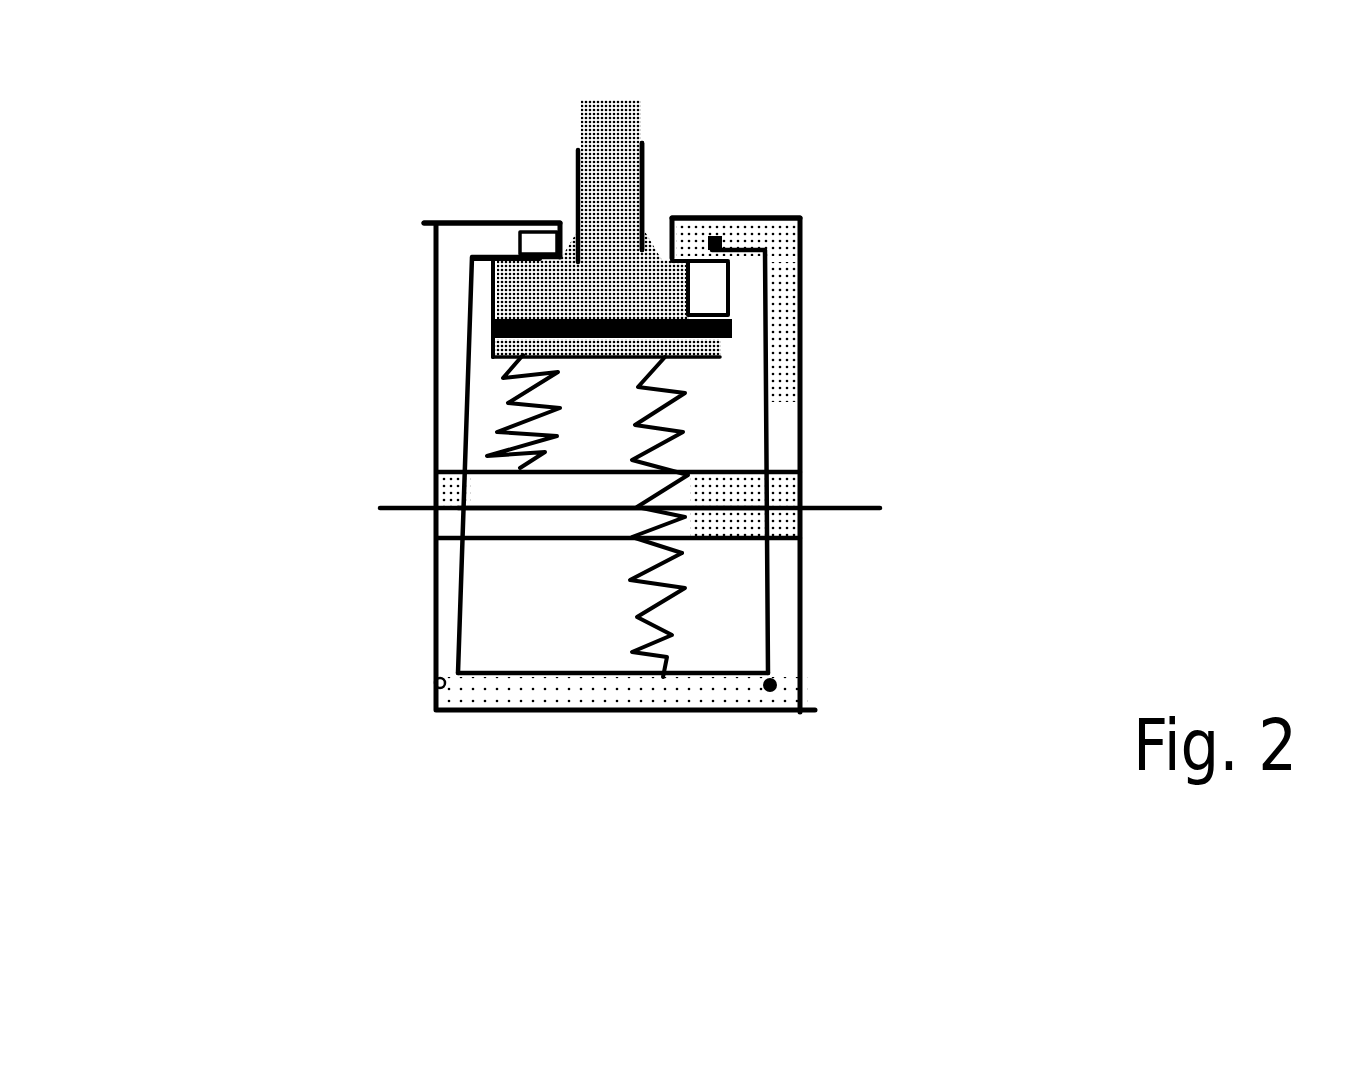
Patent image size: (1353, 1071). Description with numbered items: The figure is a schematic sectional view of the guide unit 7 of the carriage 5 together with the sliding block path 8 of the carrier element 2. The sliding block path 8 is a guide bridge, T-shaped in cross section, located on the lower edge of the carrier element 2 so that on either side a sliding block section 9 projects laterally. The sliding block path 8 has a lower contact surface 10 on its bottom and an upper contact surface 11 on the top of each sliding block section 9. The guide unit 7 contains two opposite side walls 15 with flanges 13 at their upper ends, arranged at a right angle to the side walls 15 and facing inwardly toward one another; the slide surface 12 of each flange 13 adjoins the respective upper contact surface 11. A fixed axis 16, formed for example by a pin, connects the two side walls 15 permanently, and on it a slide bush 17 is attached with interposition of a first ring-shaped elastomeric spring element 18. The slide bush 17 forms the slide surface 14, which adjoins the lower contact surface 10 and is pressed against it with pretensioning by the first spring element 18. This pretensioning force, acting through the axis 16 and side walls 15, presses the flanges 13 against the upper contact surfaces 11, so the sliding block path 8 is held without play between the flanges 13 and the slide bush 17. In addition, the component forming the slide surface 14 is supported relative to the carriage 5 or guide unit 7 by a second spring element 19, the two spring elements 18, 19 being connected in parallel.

The carrier element 2 is at (614, 176).
The carriage 5 is at (715, 690).
The guide unit 7 is at (822, 575).
The sliding block path 8 is at (637, 317).
The sliding block section 9 is at (540, 302).
The lower contact surface 10 is at (495, 506).
The upper contact surface 11 is at (517, 238).
The slide surface 12 is at (505, 343).
The flange 13 is at (487, 222).
The slide surface 14 is at (600, 316).
The side wall 15 is at (457, 345).
The axis 16 is at (800, 493).
The slide bush 17 is at (533, 362).
The first spring element 18 is at (427, 508).
The second spring element 19 is at (608, 604).